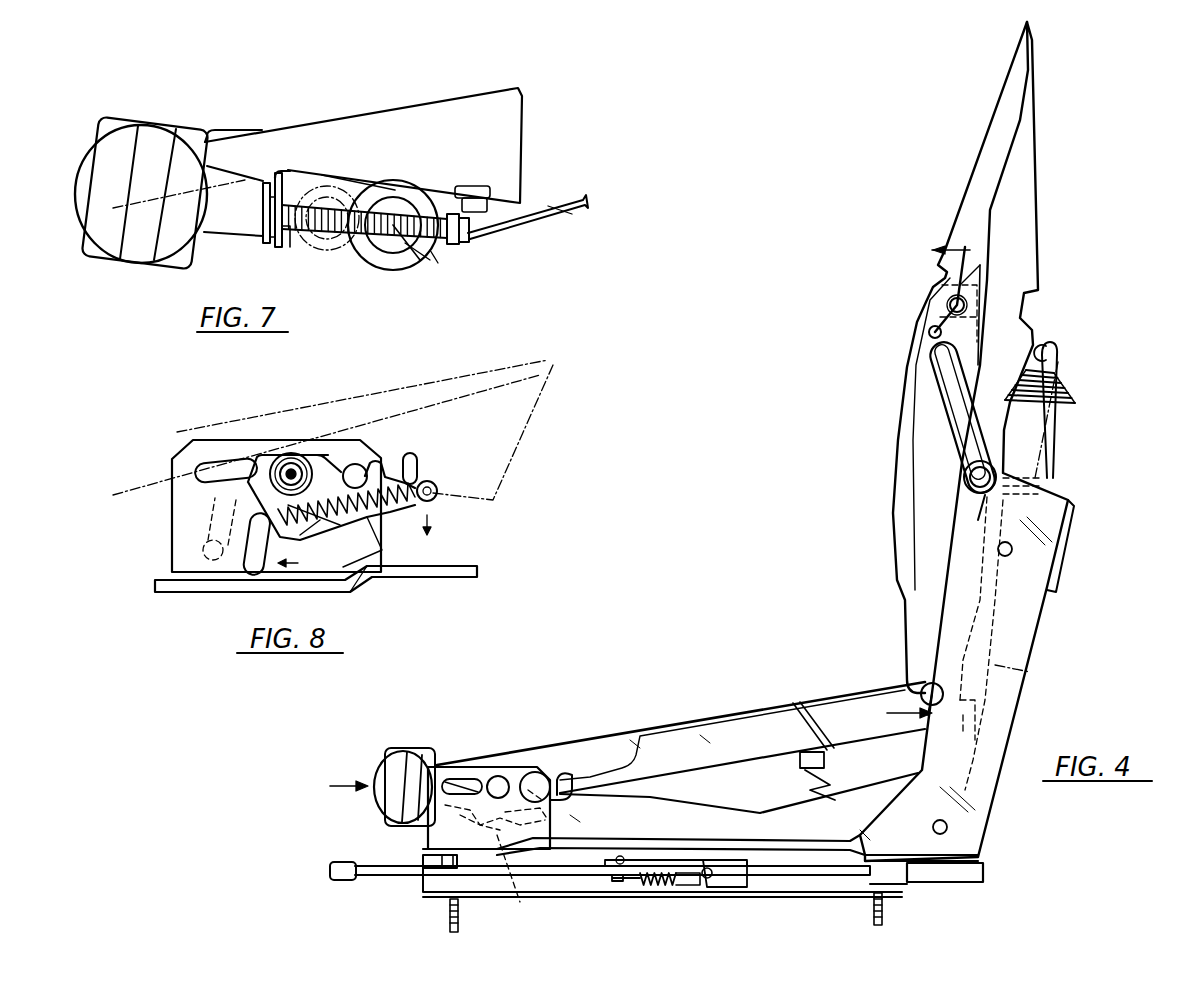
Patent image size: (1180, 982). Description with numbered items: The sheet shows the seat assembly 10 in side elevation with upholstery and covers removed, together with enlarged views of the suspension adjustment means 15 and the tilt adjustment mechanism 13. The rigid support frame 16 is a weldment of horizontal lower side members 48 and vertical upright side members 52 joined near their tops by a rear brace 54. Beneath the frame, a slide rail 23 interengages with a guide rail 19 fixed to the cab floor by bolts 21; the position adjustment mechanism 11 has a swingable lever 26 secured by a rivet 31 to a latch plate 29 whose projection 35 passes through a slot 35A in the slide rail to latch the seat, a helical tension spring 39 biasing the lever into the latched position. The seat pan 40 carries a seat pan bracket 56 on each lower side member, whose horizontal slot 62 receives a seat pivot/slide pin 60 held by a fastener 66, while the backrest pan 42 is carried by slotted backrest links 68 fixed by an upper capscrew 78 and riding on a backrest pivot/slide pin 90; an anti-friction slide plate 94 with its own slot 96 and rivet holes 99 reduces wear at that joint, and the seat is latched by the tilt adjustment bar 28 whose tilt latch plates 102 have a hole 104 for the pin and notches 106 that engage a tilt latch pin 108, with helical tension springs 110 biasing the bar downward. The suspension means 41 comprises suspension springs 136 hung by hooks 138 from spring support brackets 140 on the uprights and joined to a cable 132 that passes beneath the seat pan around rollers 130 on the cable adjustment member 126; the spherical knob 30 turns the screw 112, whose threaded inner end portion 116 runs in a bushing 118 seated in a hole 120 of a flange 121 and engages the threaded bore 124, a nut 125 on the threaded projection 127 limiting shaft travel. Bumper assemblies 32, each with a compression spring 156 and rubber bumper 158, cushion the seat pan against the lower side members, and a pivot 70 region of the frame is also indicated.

In FIG. 4, the seat assembly 10 is at (918, 484).
In FIG. 4, the position adjustment mechanism 11 is at (647, 903).
In FIG. 8, the tilt adjustment mechanism 13 is at (246, 455).
In FIG. 4, the tilt adjustment mechanism 13 is at (462, 838).
In FIG. 7, the suspension adjustment means 15 is at (207, 280).
In FIG. 4, the suspension adjustment means 15 is at (333, 786).
In FIG. 8, the support frame 16 is at (453, 580).
In FIG. 4, the guide rail 19 is at (970, 883).
In FIG. 4, the bolt 21 is at (449, 917).
In FIG. 4, the slide rail 23 is at (897, 884).
In FIG. 4, the lever 26 is at (380, 877).
In FIG. 8, the tilt adjustment bar 28 is at (253, 575).
In FIG. 4, the tilt adjustment bar 28 is at (509, 887).
In FIG. 4, the latch plate 29 is at (747, 877).
In FIG. 7, the spherical knob 30 is at (103, 135).
In FIG. 4, the spherical knob 30 is at (387, 765).
In FIG. 4, the rivet 31 is at (620, 856).
In FIG. 4, the bumper assembly 32 is at (790, 784).
In FIG. 4, the projection 35 is at (673, 888).
In FIG. 4, the slot 35A is at (660, 890).
In FIG. 4, the helical tension spring 39 is at (637, 884).
In FIG. 7, the seat pan 40 is at (390, 183).
In FIG. 8, the seat pan 40 is at (530, 365).
In FIG. 4, the seat pan 40 is at (693, 721).
In FIG. 7, the suspension means 41 is at (538, 217).
In FIG. 4, the suspension means 41 is at (1078, 408).
In FIG. 4, the backrest pan 42 is at (1028, 181).
In FIG. 8, the lower side member 48 is at (407, 574).
In FIG. 4, the lower side member 48 is at (982, 860).
In FIG. 4, the upright side member 52 is at (1040, 612).
In FIG. 4, the rear brace 54 is at (1062, 553).
In FIG. 8, the seat pan bracket 56 is at (172, 540).
In FIG. 4, the seat pan bracket 56 is at (460, 766).
In FIG. 8, the seat pivot/slide pin 60 is at (289, 464).
In FIG. 4, the seat pivot/slide pin 60 is at (499, 775).
In FIG. 8, the horizontal slot 62 is at (198, 480).
In FIG. 4, the horizontal slot 62 is at (470, 779).
In FIG. 8, the fastener 66 is at (283, 463).
In FIG. 4, the backrest link 68 is at (907, 634).
In FIG. 4, the pivot pin 70 is at (925, 688).
In FIG. 4, the upper capscrew 78 is at (950, 302).
In FIG. 4, the backrest pivot/slide pin 90 is at (960, 481).
In FIG. 4, the anti-friction slide plate 94 is at (947, 395).
In FIG. 4, the slot 96 is at (957, 418).
In FIG. 4, the rivet hole 99 is at (929, 332).
In FIG. 8, the tilt latch plate 102 is at (322, 452).
In FIG. 4, the tilt latch plate 102 is at (537, 772).
In FIG. 8, the hole 104 is at (294, 466).
In FIG. 8, the notch 106 is at (351, 464).
In FIG. 8, the tilt latch pin 108 is at (405, 452).
In FIG. 4, the tilt latch pin 108 is at (540, 765).
In FIG. 8, the helical tension spring 110 is at (322, 532).
In FIG. 7, the screw 112 is at (433, 246).
In FIG. 7, the threaded inner end portion 116 is at (333, 240).
In FIG. 7, the bushing 118 is at (286, 245).
In FIG. 7, the hole 120 is at (268, 186).
In FIG. 7, the flange 121 is at (266, 246).
In FIG. 7, the threaded bore 124 is at (400, 254).
In FIG. 7, the nut 125 is at (453, 251).
In FIG. 7, the cable adjustment member 126 is at (380, 250).
In FIG. 7, the threaded projection 127 is at (470, 241).
In FIG. 7, the roller 130 is at (427, 258).
In FIG. 7, the cable 132 is at (570, 210).
In FIG. 4, the cable 132 is at (1031, 670).
In FIG. 4, the suspension spring 136 is at (1068, 388).
In FIG. 4, the hook 138 is at (1062, 353).
In FIG. 4, the spring support bracket 140 is at (1054, 342).
In FIG. 4, the compression spring 156 is at (840, 790).
In FIG. 4, the rubber bumper 158 is at (828, 760).